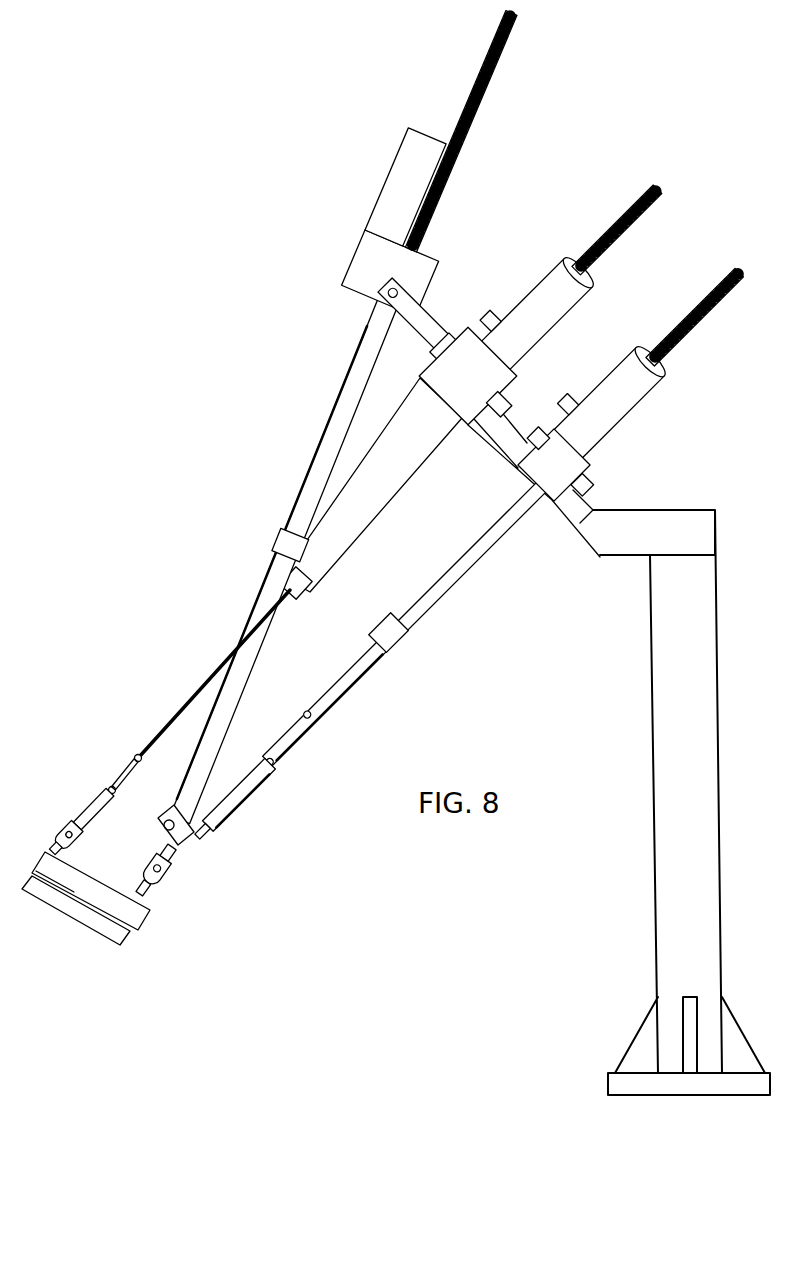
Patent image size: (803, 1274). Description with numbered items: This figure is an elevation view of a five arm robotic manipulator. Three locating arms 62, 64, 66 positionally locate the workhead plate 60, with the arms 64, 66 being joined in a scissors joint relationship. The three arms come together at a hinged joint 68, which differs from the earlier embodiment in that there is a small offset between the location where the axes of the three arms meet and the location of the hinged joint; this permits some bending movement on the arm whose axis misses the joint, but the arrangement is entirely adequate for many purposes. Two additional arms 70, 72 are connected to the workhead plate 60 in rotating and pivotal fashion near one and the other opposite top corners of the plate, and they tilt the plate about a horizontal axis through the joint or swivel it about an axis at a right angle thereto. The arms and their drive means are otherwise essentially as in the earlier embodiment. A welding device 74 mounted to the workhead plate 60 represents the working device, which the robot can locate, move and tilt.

The workhead plate 60 is at (92, 882).
The arm 62 is at (234, 703).
The arm 64 is at (237, 800).
The arm 66 is at (298, 748).
The hinged joint 68 is at (150, 897).
The additional arm 70 is at (92, 808).
The additional arm 72 is at (127, 768).
The welding device 74 is at (83, 913).